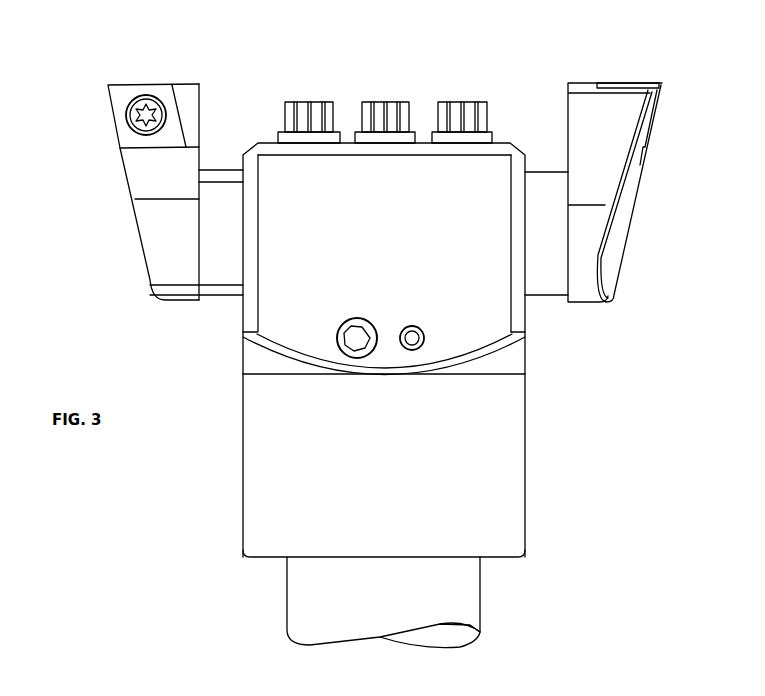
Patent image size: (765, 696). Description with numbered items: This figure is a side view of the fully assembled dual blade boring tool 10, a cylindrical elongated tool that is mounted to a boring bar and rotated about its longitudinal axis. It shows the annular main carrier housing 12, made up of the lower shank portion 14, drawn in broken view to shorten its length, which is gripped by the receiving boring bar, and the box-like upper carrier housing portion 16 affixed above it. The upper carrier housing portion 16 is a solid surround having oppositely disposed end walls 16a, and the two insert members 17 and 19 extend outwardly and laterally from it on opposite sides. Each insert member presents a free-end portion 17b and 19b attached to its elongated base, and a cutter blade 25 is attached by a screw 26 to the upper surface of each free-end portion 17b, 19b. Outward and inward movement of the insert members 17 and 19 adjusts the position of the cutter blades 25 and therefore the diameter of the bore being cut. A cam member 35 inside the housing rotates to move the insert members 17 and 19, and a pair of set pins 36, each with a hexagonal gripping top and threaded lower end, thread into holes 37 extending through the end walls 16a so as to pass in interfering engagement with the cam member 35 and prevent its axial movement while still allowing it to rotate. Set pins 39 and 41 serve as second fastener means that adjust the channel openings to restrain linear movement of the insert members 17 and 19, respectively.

The dual blade boring tool 10 is at (218, 498).
The main carrier housing 12 is at (427, 465).
The lower shank portion 14 is at (434, 602).
The upper carrier housing portion 16 is at (427, 350).
The end wall 16a is at (339, 250).
The insert member 17 is at (196, 163).
The free-end portion 17b is at (124, 224).
The insert member 19 is at (593, 160).
The free-end portion 19b is at (662, 193).
The cutter blade 25 is at (388, 93).
The attachment screw 26 is at (98, 115).
The cam member 35 is at (385, 93).
The set pin 36 is at (347, 305).
The hole 37 is at (427, 287).
The set pin 39 is at (308, 93).
The set pin 41 is at (466, 87).